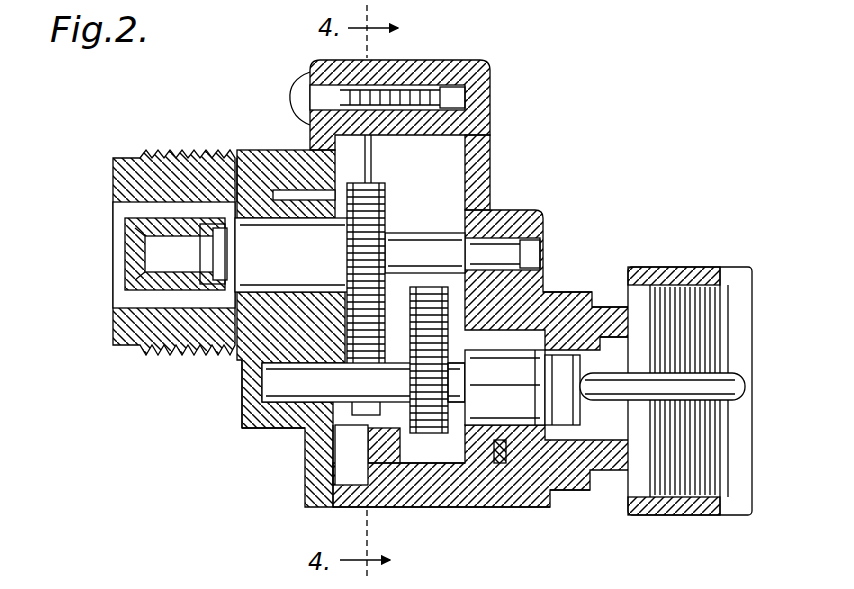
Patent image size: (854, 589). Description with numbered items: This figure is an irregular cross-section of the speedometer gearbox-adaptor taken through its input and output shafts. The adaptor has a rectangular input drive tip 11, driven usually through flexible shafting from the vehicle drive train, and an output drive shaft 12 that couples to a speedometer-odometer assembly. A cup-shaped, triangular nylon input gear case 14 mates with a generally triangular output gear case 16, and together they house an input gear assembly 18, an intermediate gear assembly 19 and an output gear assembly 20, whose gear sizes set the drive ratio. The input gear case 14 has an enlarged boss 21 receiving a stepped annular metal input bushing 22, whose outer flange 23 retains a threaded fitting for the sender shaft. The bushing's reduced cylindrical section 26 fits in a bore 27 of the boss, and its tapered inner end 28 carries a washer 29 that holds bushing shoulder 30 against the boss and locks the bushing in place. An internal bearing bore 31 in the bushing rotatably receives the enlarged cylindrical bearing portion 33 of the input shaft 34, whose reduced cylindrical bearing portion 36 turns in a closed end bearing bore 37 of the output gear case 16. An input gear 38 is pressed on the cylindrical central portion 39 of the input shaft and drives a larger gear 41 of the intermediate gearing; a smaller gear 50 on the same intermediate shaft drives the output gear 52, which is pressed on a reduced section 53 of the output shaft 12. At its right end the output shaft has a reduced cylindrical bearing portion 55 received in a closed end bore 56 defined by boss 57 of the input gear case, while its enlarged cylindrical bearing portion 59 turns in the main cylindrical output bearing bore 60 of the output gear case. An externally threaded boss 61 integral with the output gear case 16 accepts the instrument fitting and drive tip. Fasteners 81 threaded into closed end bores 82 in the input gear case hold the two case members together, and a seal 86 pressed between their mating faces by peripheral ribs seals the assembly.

The input drive tip 11 is at (748, 388).
The output drive shaft 12 is at (115, 230).
The input gear case 14 is at (484, 66).
The output gear case 16 is at (240, 368).
The input gear assembly 18 is at (445, 507).
The intermediate gear assembly 19 is at (441, 546).
The output gear assembly 20 is at (306, 152).
The boss 21 is at (560, 300).
The input bushing 22 is at (610, 302).
The outer flange 23 is at (626, 495).
The reduced cylindrical section 26 is at (570, 492).
The bore 27 is at (688, 268).
The inner end 28 is at (490, 507).
The washer 29 is at (505, 387).
The bushing shoulder 30 is at (560, 442).
The internal bearing bore 31 is at (503, 455).
The enlarged cylindrical bearing portion 33 is at (505, 397).
The input shaft 34 is at (336, 440).
The reduced cylindrical bearing portion 36 is at (305, 388).
The closed end bearing bore 37 is at (250, 395).
The input gear 38 is at (424, 436).
The cylindrical central portion 39 is at (408, 405).
The larger gear 41 is at (428, 256).
The smaller gear 50 is at (352, 345).
The output gear 52 is at (374, 180).
The reduced section 53 is at (387, 216).
The reduced cylindrical bearing portion 55 is at (500, 214).
The closed end bore 56 is at (545, 242).
The boss 57 is at (530, 232).
The enlarged cylindrical bearing portion 59 is at (230, 280).
The main cylindrical output bearing bore 60 is at (244, 160).
The externally threaded boss 61 is at (168, 152).
The fasteners 81 is at (300, 80).
The closed end bores 82 is at (468, 95).
The seal 86 is at (352, 502).